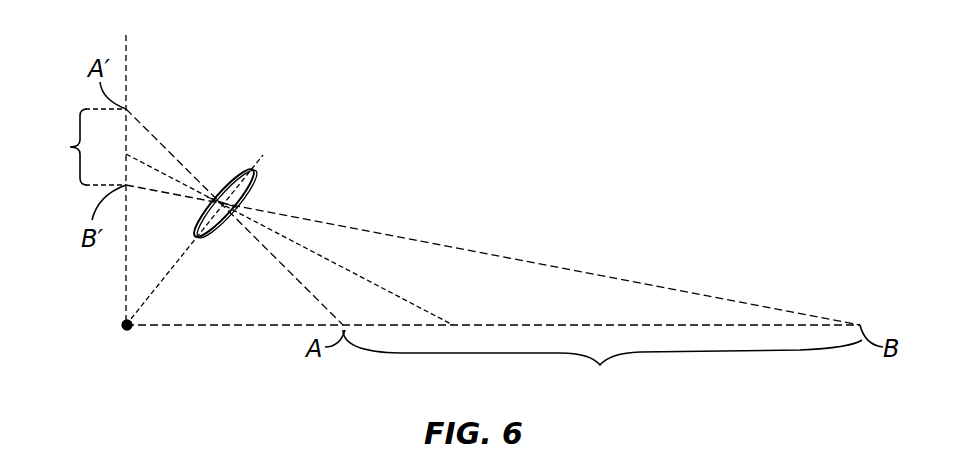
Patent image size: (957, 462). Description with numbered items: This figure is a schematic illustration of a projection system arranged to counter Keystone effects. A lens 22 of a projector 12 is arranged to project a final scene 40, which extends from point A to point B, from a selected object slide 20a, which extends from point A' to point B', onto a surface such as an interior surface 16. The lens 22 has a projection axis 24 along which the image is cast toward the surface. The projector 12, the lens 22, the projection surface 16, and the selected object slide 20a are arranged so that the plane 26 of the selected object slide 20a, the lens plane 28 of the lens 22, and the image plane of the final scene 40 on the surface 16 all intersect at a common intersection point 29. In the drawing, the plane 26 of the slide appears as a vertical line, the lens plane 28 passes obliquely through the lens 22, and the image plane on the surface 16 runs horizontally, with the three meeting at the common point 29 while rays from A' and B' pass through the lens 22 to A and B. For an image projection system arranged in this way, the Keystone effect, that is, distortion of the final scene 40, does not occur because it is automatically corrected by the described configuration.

The projector 12 is at (218, 98).
The lens 22 is at (233, 173).
The selected object slide 20a is at (76, 147).
The projection axis 24 is at (345, 265).
The interior surface 16 is at (510, 325).
The plane of the selected object slide 26 is at (126, 272).
The lens plane 28 is at (172, 266).
The common intersection point 29 is at (123, 332).
The final scene 40 is at (602, 365).